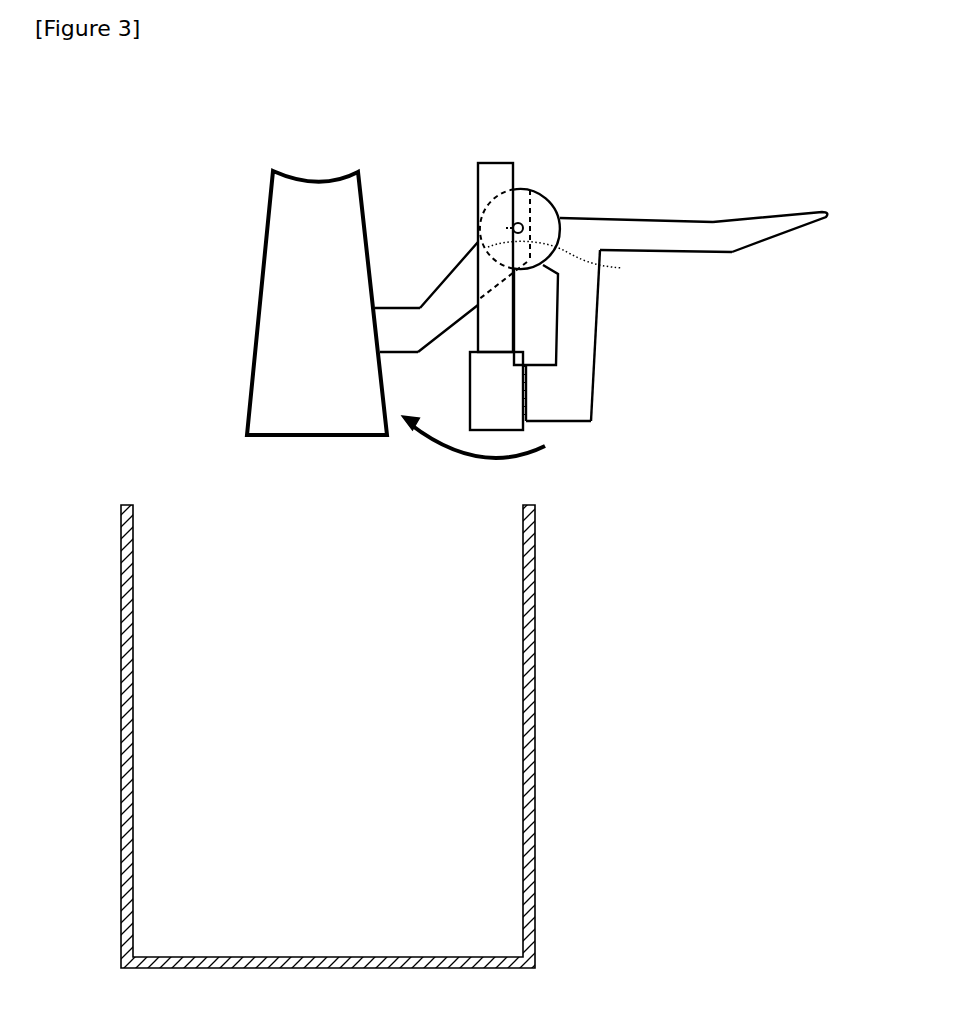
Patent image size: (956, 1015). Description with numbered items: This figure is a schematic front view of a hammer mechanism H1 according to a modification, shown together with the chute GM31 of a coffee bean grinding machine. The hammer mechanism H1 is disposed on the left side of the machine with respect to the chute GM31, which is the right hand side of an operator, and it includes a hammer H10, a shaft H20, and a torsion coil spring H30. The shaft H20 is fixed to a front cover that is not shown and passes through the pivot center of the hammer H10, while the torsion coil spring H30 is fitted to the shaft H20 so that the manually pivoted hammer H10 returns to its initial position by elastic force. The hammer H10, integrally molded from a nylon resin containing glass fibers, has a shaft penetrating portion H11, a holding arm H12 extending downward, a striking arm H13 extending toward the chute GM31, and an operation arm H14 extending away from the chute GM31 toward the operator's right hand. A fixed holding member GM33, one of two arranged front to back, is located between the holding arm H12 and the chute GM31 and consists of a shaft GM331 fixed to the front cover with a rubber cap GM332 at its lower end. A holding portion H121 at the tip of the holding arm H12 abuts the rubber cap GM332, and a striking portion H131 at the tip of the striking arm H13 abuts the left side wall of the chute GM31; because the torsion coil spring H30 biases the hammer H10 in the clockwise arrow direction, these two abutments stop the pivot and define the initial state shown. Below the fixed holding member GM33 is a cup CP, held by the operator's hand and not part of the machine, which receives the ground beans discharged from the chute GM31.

The hammer mechanism H1 is at (583, 132).
The hammer H10 is at (610, 212).
The shaft penetrating portion H11 is at (550, 198).
The holding arm H12 is at (598, 315).
The holding portion H121 is at (548, 406).
The striking arm H13 is at (452, 272).
The striking portion H131 is at (395, 322).
The operation arm H14 is at (713, 221).
The shaft H20 is at (519, 223).
The torsion coil spring H30 is at (574, 261).
The chute GM31 is at (260, 293).
The fixed holding member GM33 is at (472, 180).
The shaft GM331 is at (478, 207).
The rubber cap GM332 is at (487, 410).
The cup CP is at (536, 592).